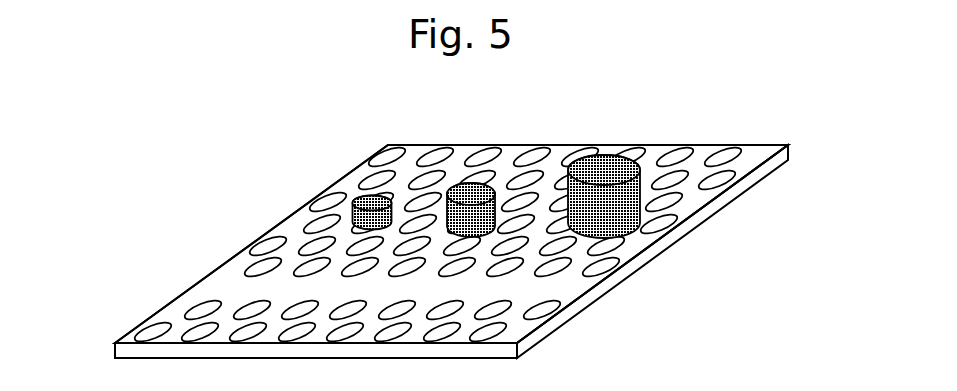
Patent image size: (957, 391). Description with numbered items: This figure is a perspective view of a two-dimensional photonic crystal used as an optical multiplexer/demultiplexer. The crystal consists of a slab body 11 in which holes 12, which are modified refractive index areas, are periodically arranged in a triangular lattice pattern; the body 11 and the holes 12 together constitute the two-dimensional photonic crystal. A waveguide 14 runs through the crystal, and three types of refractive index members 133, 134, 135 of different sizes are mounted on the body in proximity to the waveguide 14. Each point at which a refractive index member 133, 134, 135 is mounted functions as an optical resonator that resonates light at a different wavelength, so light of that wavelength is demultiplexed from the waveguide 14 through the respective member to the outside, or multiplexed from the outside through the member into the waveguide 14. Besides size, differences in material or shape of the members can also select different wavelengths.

The body 11 is at (302, 230).
The holes 12 is at (210, 312).
The waveguide 14 is at (265, 287).
The refractive index member 133 is at (374, 199).
The refractive index member 134 is at (472, 193).
The refractive index member 135 is at (604, 170).